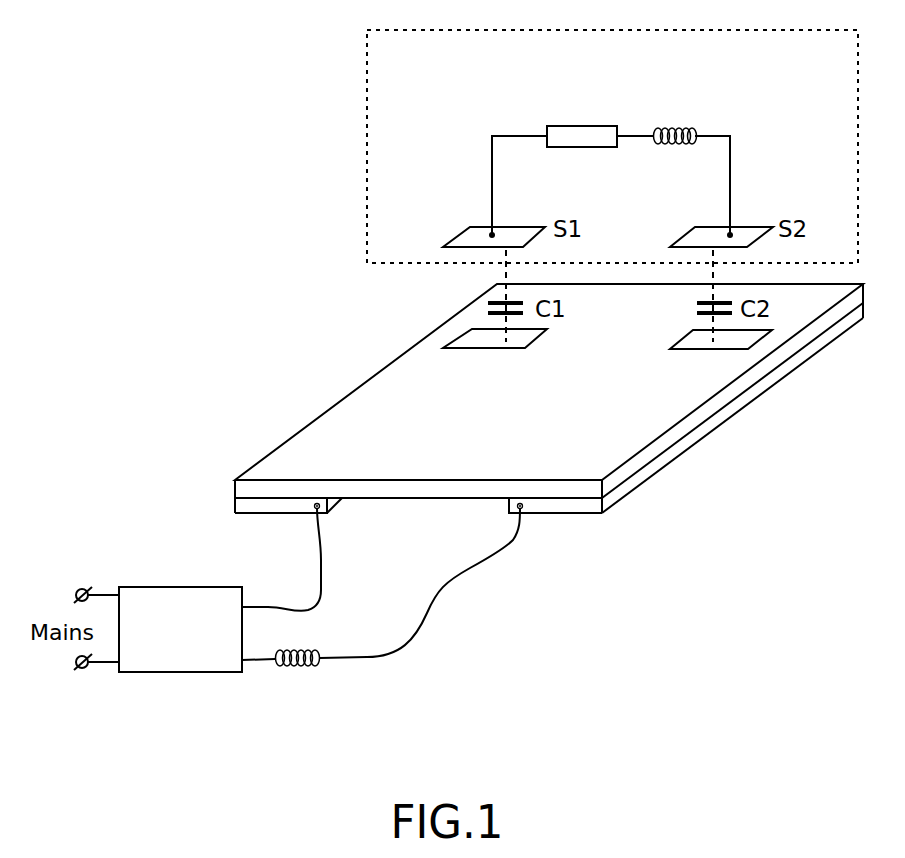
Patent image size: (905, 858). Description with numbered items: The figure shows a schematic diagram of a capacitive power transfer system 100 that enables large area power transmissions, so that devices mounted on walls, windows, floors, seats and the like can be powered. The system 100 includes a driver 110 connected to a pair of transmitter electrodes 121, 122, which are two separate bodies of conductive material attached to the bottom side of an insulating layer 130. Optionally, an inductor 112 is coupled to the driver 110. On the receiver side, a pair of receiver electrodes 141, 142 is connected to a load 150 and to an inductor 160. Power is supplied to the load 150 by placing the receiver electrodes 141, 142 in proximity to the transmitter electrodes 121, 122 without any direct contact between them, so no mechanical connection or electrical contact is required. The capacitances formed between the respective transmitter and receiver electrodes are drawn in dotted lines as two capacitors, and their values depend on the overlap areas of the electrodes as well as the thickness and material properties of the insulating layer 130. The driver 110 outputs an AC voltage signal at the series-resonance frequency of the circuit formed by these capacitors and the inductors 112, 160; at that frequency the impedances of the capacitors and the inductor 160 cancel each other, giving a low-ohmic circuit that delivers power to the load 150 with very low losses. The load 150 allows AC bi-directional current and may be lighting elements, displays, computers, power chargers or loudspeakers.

The capacitive power transfer system 100 is at (116, 163).
The driver 110 is at (175, 672).
The inductor 112 is at (295, 670).
The transmitter electrode 121 is at (242, 505).
The transmitter electrode 122 is at (580, 505).
The insulating layer 130 is at (697, 417).
The receiver electrode 141 is at (492, 173).
The receiver electrode 142 is at (730, 173).
The load 150 is at (582, 126).
The inductor 160 is at (673, 126).